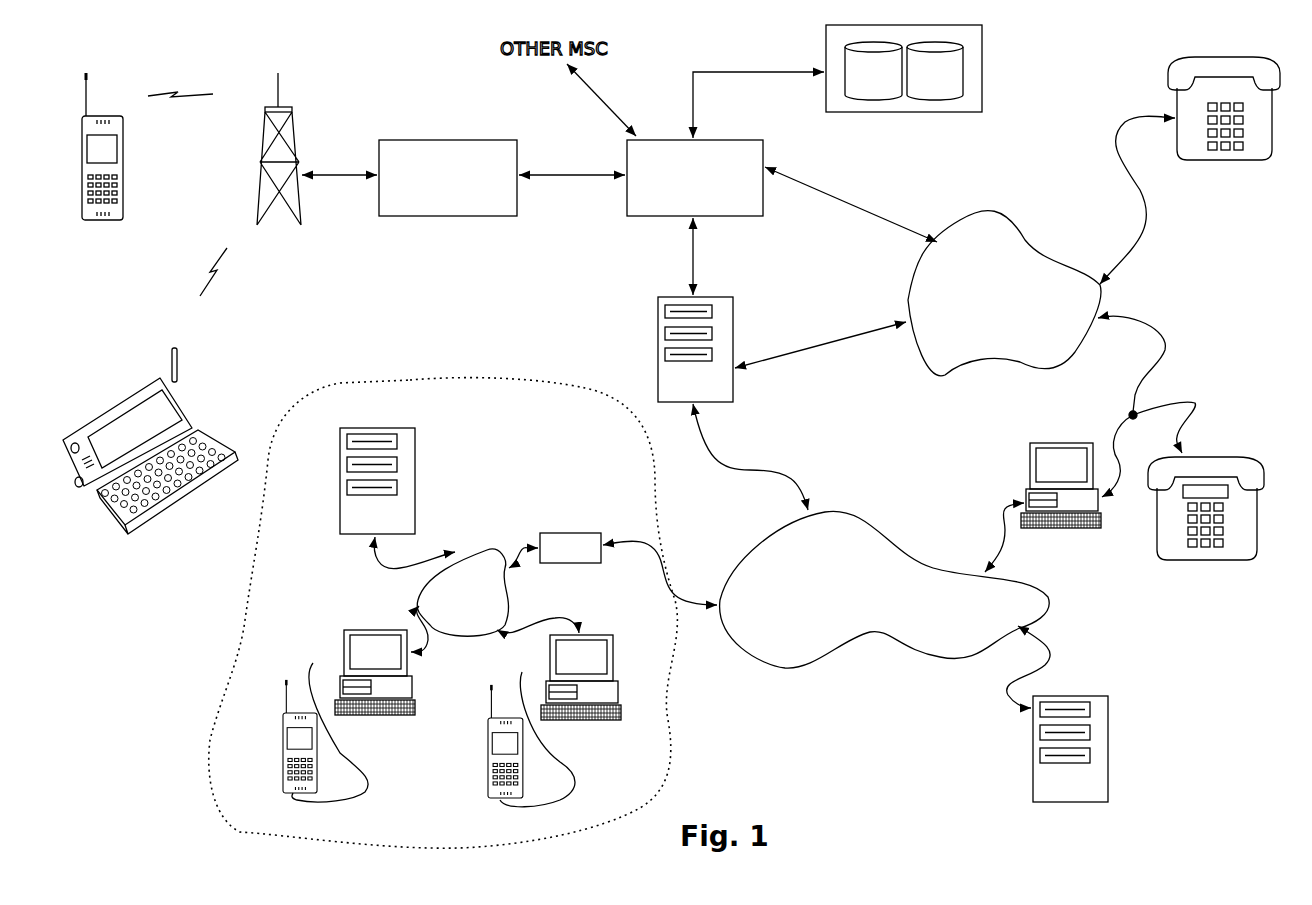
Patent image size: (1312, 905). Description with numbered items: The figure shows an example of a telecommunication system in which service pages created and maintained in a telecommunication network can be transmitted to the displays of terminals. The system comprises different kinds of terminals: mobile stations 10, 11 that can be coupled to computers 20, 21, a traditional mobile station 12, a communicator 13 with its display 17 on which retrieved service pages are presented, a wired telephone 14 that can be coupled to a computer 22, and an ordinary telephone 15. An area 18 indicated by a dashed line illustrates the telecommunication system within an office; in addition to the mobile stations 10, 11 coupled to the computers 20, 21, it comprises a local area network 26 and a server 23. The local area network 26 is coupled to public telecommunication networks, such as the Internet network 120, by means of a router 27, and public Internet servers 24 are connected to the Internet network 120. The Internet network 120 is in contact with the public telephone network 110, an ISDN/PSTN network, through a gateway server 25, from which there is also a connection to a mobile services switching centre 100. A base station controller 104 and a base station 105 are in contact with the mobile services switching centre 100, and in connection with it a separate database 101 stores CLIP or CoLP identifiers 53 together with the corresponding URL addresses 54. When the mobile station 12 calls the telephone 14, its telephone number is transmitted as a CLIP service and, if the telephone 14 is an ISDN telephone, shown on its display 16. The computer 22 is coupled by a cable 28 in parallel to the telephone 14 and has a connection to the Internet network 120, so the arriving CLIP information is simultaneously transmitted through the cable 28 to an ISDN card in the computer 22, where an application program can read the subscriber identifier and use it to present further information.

The mobile station 10 is at (283, 748).
The mobile station 11 is at (488, 752).
The traditional mobile station 12 is at (124, 156).
The communicator 13 is at (150, 441).
The wired telephone 14 is at (1228, 538).
The ordinary telephone 15 is at (1210, 160).
The display of the telephone 16 is at (1250, 495).
The display of the communicator 17 is at (115, 428).
The area 18 is at (222, 681).
The computer 20 is at (412, 688).
The computer 21 is at (615, 690).
The computer 22 is at (1025, 500).
The server 23 is at (340, 480).
The public Internet server 24 is at (1033, 745).
The gateway server 25 is at (657, 357).
The local area network 26 is at (485, 548).
The router 27 is at (580, 533).
The cable 28 is at (1134, 412).
The CLIP or CoLP identifiers 53 is at (843, 105).
The URL addresses 54 is at (982, 100).
The mobile services switching centre 100 is at (727, 217).
The database 101 is at (927, 80).
The base station controller 104 is at (440, 141).
The base station 105 is at (300, 143).
The public telephone network 110 is at (1040, 372).
The Internet network 120 is at (808, 655).